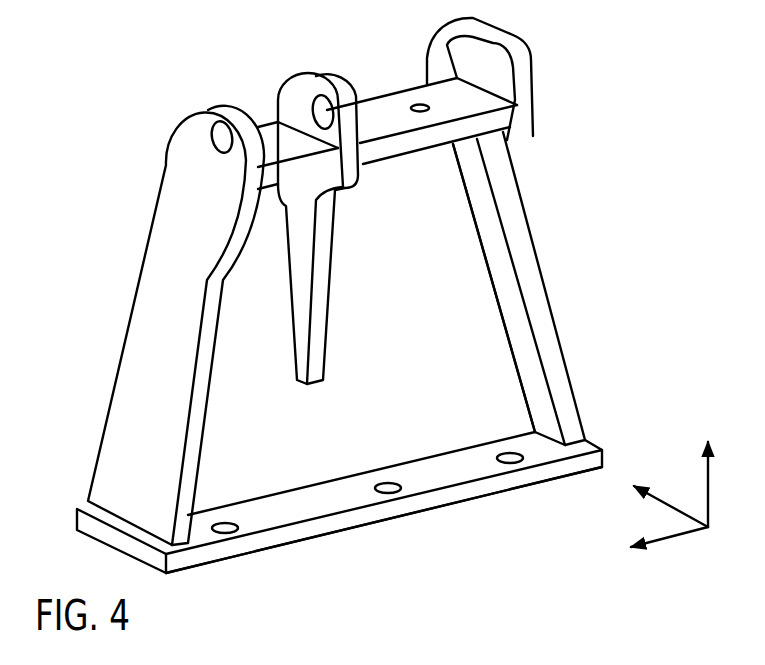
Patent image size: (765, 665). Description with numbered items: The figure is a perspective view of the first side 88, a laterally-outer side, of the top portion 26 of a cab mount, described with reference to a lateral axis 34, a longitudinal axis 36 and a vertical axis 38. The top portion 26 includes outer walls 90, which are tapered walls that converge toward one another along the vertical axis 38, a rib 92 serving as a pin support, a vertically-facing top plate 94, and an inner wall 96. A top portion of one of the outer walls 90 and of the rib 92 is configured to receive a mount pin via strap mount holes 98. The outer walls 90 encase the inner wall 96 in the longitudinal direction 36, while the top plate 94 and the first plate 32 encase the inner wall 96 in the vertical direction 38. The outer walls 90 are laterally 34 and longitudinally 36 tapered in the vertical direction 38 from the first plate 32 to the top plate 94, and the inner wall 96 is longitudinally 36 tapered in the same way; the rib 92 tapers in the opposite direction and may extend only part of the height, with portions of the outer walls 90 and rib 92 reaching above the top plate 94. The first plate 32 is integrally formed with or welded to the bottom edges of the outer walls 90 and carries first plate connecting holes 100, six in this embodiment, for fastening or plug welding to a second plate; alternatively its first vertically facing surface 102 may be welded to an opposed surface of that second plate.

The top portion 26 is at (378, 308).
The first plate 32 is at (339, 496).
The lateral axis 34 is at (678, 505).
The longitudinal axis 36 is at (667, 540).
The vertical axis 38 is at (708, 488).
The first side 88 is at (283, 422).
The outer walls 90 is at (347, 281).
The rib 92 is at (324, 253).
The top plate 94 is at (378, 100).
The inner wall 96 is at (468, 278).
The strap mount holes 98 is at (320, 110).
The first plate connecting holes 100 is at (227, 526).
The first vertically facing surface 102 is at (318, 541).